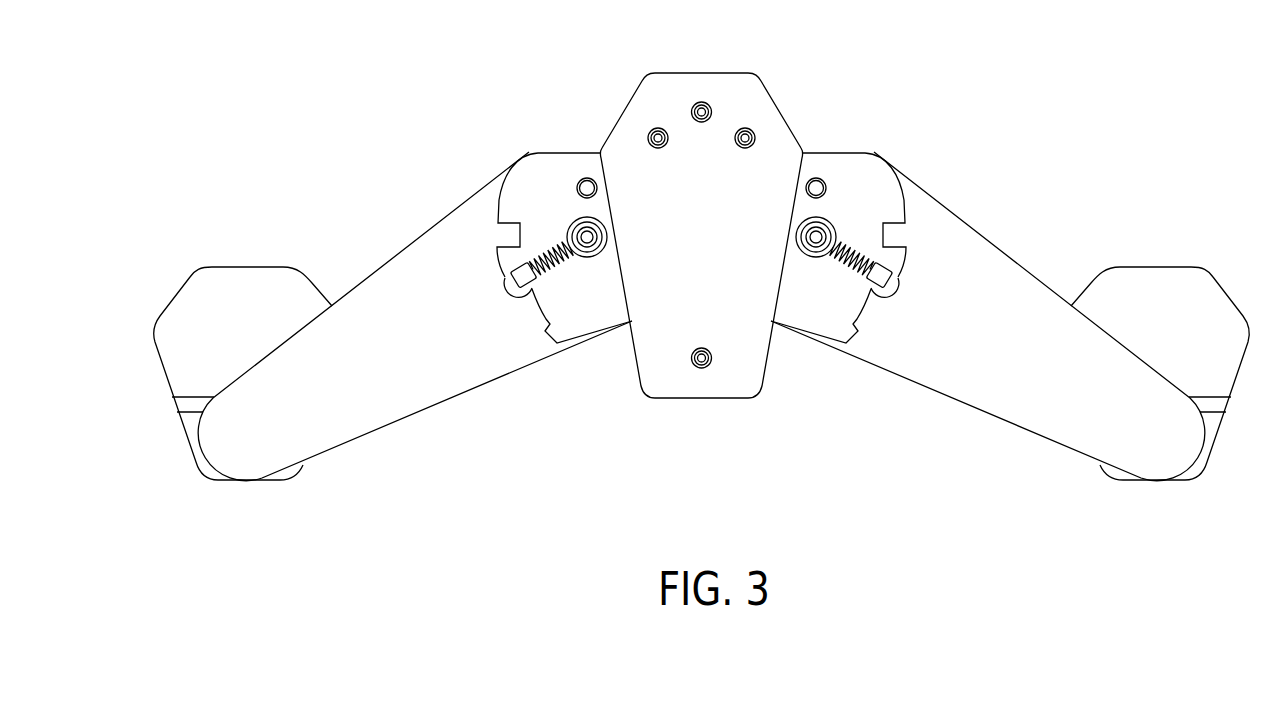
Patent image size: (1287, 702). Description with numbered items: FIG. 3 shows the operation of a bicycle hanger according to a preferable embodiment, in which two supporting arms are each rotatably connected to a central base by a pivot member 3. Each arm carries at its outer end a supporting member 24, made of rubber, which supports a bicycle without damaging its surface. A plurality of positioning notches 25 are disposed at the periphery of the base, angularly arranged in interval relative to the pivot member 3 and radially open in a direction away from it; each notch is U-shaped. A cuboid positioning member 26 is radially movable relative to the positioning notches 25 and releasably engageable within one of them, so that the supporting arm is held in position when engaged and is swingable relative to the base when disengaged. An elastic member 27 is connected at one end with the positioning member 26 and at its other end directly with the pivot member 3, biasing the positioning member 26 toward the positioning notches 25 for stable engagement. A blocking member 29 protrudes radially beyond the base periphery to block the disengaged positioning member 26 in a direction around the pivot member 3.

The pivot member 3 is at (837, 210).
The supporting member 24 is at (248, 287).
The positioning notches 25 is at (502, 235).
The positioning member 26 is at (888, 278).
The elastic member 27 is at (843, 277).
The blocking member 29 is at (558, 330).